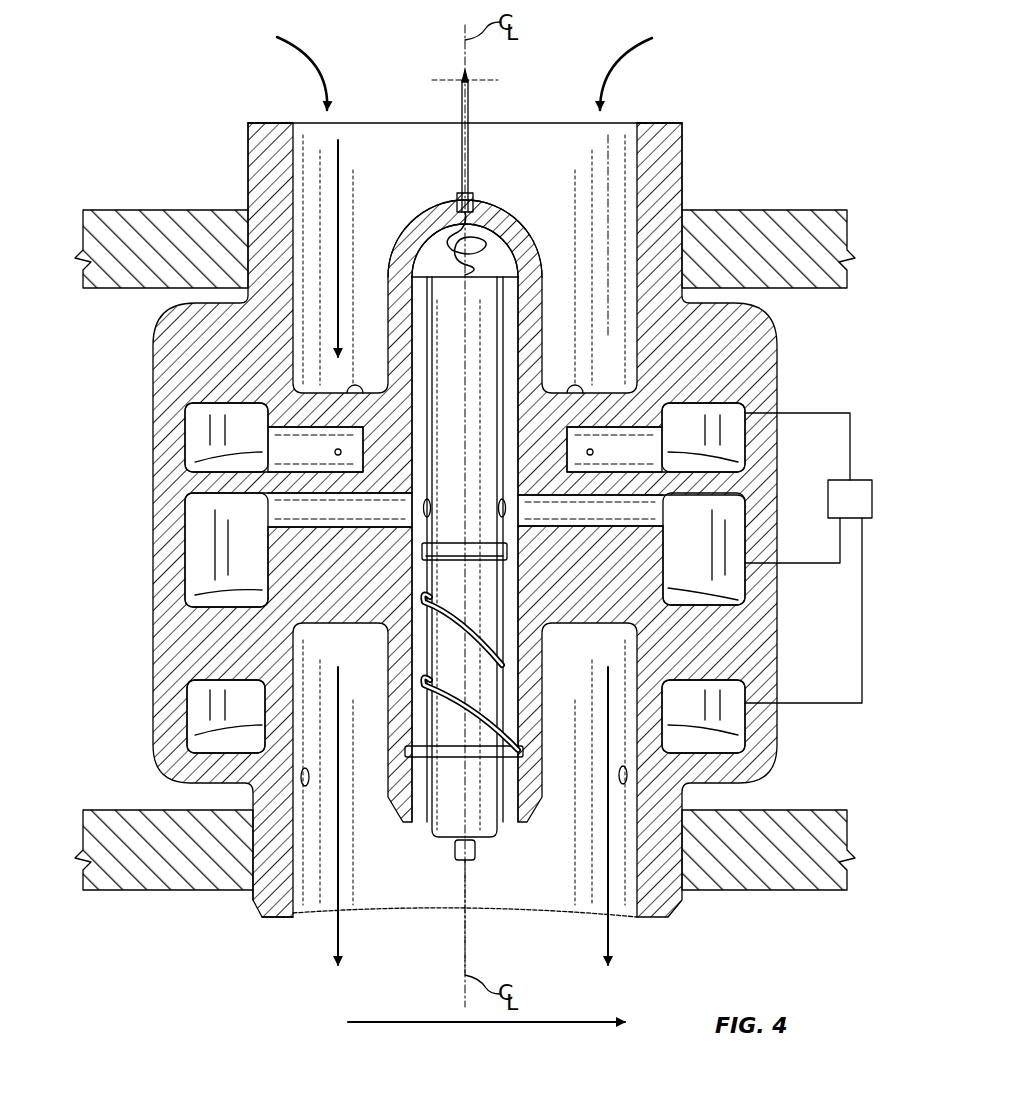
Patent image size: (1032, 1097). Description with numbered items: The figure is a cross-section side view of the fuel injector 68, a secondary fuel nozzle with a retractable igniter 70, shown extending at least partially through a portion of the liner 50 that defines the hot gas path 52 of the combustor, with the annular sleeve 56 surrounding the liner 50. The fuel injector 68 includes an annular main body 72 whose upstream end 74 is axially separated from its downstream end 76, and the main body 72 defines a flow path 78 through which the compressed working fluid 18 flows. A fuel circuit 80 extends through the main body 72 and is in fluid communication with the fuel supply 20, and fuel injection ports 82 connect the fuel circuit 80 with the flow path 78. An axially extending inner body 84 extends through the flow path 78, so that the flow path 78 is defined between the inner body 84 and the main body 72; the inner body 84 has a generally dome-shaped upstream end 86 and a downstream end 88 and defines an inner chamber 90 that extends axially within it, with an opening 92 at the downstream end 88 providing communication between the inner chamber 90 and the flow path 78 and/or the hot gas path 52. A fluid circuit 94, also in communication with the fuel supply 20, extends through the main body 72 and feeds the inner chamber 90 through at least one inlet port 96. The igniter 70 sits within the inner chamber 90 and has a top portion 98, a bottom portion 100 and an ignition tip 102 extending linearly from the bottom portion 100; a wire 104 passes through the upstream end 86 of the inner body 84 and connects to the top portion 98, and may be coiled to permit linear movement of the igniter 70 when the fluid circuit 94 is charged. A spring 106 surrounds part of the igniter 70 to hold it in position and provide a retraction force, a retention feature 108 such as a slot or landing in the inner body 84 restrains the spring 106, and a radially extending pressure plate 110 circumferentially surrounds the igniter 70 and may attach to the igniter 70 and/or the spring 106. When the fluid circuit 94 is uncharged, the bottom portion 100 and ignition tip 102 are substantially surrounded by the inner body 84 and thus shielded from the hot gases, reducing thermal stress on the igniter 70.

The compressed working fluid 18 is at (312, 50).
The fuel supply 20 is at (808, 558).
The liner 50 is at (770, 815).
The hot gas path 52 is at (450, 1023).
The sleeve 56 is at (758, 235).
The fuel injector 68 is at (108, 356).
The retractable igniter 70 is at (472, 377).
The main body 72 is at (685, 170).
The upstream end 74 is at (268, 120).
The downstream end 76 is at (272, 918).
The flow path 78 is at (342, 267).
The fuel circuit 80 is at (200, 433).
The fuel injection ports 82 is at (310, 780).
The inner body 84 is at (390, 645).
The upstream end 86 is at (503, 212).
The downstream end 88 is at (505, 823).
The inner chamber 90 is at (525, 378).
The opening 92 is at (424, 823).
The fluid circuit 94 is at (200, 583).
The inlet port 96 is at (425, 500).
The top portion 98 is at (496, 248).
The bottom portion 100 is at (478, 855).
The ignition tip 102 is at (466, 880).
The wire 104 is at (472, 140).
The spring 106 is at (508, 665).
The retention feature 108 is at (524, 755).
The pressure plate 110 is at (508, 550).